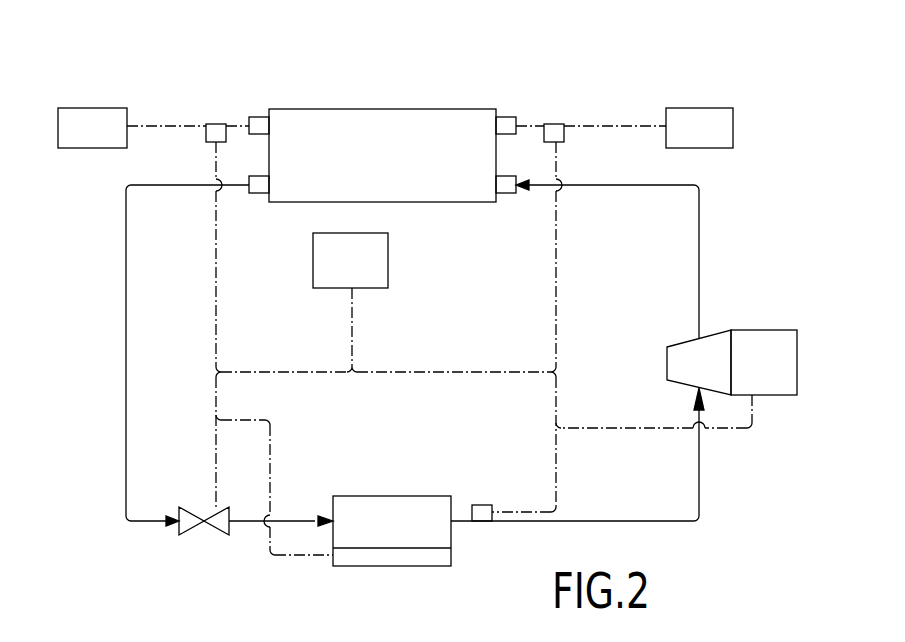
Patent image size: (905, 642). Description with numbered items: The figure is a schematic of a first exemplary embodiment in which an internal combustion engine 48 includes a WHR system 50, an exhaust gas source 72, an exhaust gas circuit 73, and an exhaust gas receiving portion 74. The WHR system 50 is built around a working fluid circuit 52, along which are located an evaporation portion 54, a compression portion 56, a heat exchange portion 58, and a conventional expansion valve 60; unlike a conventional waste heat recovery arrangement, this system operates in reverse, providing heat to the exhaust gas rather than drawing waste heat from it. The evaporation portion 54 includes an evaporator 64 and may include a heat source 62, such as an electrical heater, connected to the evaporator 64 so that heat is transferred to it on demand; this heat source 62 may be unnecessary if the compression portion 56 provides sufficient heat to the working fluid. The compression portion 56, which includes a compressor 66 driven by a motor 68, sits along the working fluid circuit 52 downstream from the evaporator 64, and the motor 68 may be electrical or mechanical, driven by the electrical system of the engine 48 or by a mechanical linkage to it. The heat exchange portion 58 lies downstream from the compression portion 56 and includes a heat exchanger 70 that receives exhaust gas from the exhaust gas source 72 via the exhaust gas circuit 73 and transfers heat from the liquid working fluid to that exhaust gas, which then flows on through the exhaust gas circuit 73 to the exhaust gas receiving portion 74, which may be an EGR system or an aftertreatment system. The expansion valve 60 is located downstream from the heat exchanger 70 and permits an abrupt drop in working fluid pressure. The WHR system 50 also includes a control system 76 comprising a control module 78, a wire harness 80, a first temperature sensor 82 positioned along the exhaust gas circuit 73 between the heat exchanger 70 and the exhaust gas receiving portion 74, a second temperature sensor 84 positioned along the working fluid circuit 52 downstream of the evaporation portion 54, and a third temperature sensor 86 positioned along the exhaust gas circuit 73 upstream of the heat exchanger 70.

The internal combustion engine 48 is at (146, 46).
The WHR system 50 is at (720, 530).
The working fluid circuit 52 is at (112, 364).
The evaporation portion 54 is at (368, 533).
The compression portion 56 is at (676, 354).
The heat exchange portion 58 is at (382, 125).
The expansion valve 60 is at (195, 531).
The heat source 62 is at (345, 561).
The evaporator 64 is at (395, 530).
The compressor 66 is at (667, 360).
The motor 68 is at (772, 376).
The heat exchanger 70 is at (391, 175).
The exhaust gas source 72 is at (103, 139).
The exhaust gas circuit 73 is at (175, 125).
The exhaust gas receiving portion 74 is at (710, 139).
The control system 76 is at (308, 256).
The control module 78 is at (363, 271).
The wire harness 80 is at (352, 325).
The first temperature sensor 82 is at (562, 140).
The second temperature sensor 84 is at (476, 505).
The third temperature sensor 86 is at (206, 130).